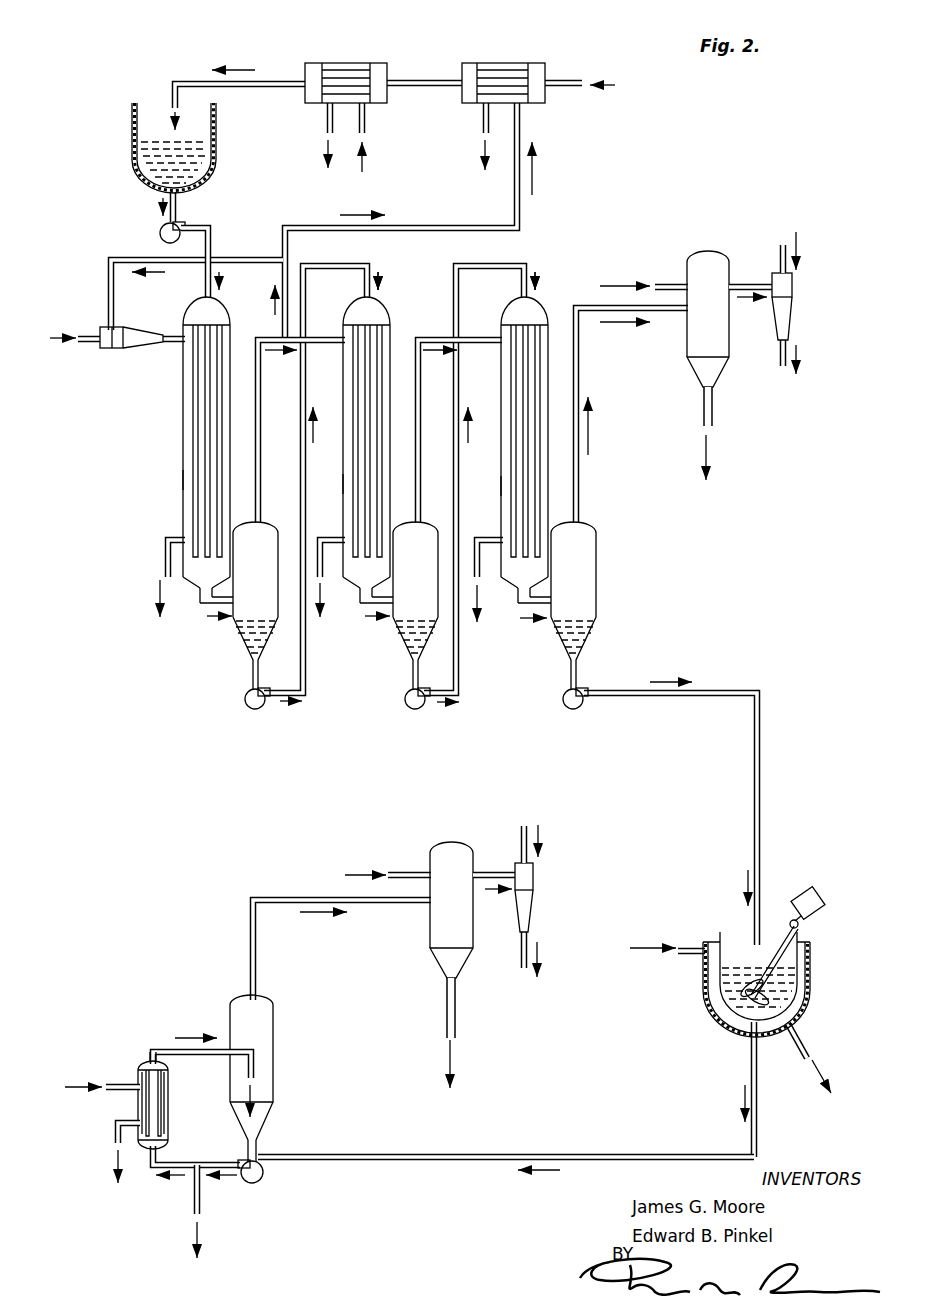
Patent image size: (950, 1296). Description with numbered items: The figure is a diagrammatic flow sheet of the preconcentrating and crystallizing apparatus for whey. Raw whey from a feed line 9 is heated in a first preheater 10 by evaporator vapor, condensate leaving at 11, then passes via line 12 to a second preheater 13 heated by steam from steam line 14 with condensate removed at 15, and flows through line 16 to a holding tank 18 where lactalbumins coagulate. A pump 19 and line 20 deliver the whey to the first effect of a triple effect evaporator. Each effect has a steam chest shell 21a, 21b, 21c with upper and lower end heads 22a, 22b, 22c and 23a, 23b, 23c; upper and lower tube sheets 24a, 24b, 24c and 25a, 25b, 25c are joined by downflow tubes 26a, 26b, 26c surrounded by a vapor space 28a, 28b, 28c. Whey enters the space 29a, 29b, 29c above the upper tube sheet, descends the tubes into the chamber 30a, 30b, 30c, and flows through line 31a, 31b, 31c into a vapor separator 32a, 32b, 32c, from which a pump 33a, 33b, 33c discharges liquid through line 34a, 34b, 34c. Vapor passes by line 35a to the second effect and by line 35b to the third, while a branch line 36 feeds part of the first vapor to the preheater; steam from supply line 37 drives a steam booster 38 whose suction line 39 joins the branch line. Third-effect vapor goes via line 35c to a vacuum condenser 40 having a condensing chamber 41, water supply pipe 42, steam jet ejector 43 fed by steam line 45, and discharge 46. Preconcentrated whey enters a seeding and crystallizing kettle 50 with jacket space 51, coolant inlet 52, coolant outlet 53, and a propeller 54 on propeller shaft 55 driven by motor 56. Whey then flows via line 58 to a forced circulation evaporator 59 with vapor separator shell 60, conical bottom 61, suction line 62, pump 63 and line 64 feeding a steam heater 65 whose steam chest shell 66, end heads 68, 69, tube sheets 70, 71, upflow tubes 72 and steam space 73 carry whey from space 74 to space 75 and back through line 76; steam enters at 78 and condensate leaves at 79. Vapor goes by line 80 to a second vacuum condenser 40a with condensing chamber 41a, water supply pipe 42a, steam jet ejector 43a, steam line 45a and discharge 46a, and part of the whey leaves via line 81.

The feed line 9 is at (578, 83).
The first preheater 10 is at (468, 63).
The condensate removal 11 is at (484, 118).
The line 12 is at (428, 83).
The second preheater 13 is at (327, 44).
The steam line 14 is at (366, 120).
The condensate removal 15 is at (327, 120).
The line 16 is at (286, 82).
The holding tank 18 is at (132, 126).
The pump 19 is at (161, 236).
The line 20 is at (200, 226).
The steam chest shell 21a is at (199, 459).
The steam chest shell 21b is at (367, 460).
The steam chest shell 21c is at (519, 461).
The upper end head 22a is at (240, 293).
The upper end head 22b is at (387, 301).
The upper end head 22c is at (557, 298).
The lower end head 23a is at (199, 588).
The lower end head 23b is at (357, 590).
The lower end head 23c is at (514, 592).
The upper tube sheet 24a is at (229, 313).
The upper tube sheet 24b is at (388, 313).
The upper tube sheet 24c is at (546, 318).
The lower tube sheet 25a is at (222, 560).
The lower tube sheet 25b is at (382, 560).
The lower tube sheet 25c is at (540, 560).
The downflow tubes 26a is at (220, 403).
The downflow tubes 26b is at (378, 393).
The downflow tubes 26c is at (535, 395).
The steam space 28a is at (186, 480).
The vapor space 28b is at (345, 484).
The vapor space 28c is at (502, 486).
The space above upper tube sheet 29a is at (186, 310).
The space above upper tube sheet 29b is at (346, 311).
The space above upper tube sheet 29c is at (503, 316).
The chamber 30a is at (216, 585).
The chamber 30b is at (374, 584).
The chamber 30c is at (534, 585).
The line 31a is at (214, 606).
The line 31b is at (374, 606).
The line 31c is at (525, 608).
The vapor separator 32a is at (278, 520).
The vapor separator 32b is at (436, 522).
The vapor separator 32c is at (598, 523).
The pump 33a is at (245, 702).
The pump 33b is at (405, 704).
The pump 33c is at (563, 706).
The line 34a is at (322, 264).
The line 34b is at (483, 264).
The line 34c is at (793, 697).
The vapor line 35a is at (261, 388).
The line 35b is at (421, 388).
The line 35c is at (581, 360).
The branch line 36 is at (515, 200).
The steam supply line 37 is at (88, 338).
The steam booster 38 is at (115, 345).
The suction line 39 is at (108, 282).
The vacuum condenser 40 is at (716, 334).
The condensing chamber 41 is at (722, 333).
The water supply pipe 42 is at (673, 285).
The steam jet ejector 43 is at (792, 318).
The steam line 45 is at (780, 257).
The discharge 46 is at (708, 410).
The vacuum condenser 40a is at (421, 942).
The condensing chamber 41a is at (433, 928).
The water supply pipe 42a is at (420, 876).
The steam jet ejector 43a is at (530, 905).
The steam line 45a is at (522, 845).
The discharge 46a is at (455, 1010).
The seeding and crystallizing kettle 50 is at (744, 1022).
The jacket space 51 is at (805, 998).
The coolant inlet 52 is at (690, 953).
The coolant outlet 53 is at (806, 1043).
The propeller 54 is at (718, 1026).
The propeller shaft 55 is at (792, 947).
The motor 56 is at (820, 902).
The line 58 is at (640, 1155).
The forced circulation single effect vacuum evaporator 59 is at (222, 992).
The vapor separator shell 60 is at (232, 1077).
The conical bottom 61 is at (262, 1125).
The suction line 62 is at (260, 1148).
The pump 63 is at (262, 1180).
The line 64 is at (220, 1160).
The steam heater 65 is at (141, 1102).
The steam chest shell 66 is at (130, 1166).
The upper end head 68 is at (152, 1052).
The lower end head 69 is at (163, 1158).
The upper tube sheet 70 is at (145, 1070).
The lower tube sheet 71 is at (163, 1136).
The upflow tubes 72 is at (155, 1110).
The steam space 73 is at (140, 1110).
The space below lower tube sheet 74 is at (160, 1143).
The space above upper tube sheet 75 is at (163, 1077).
The line 76 is at (222, 1045).
The steam supply 78 is at (108, 1083).
The condensate relief 79 is at (114, 1134).
The line 80 is at (258, 950).
The line 81 is at (198, 1208).